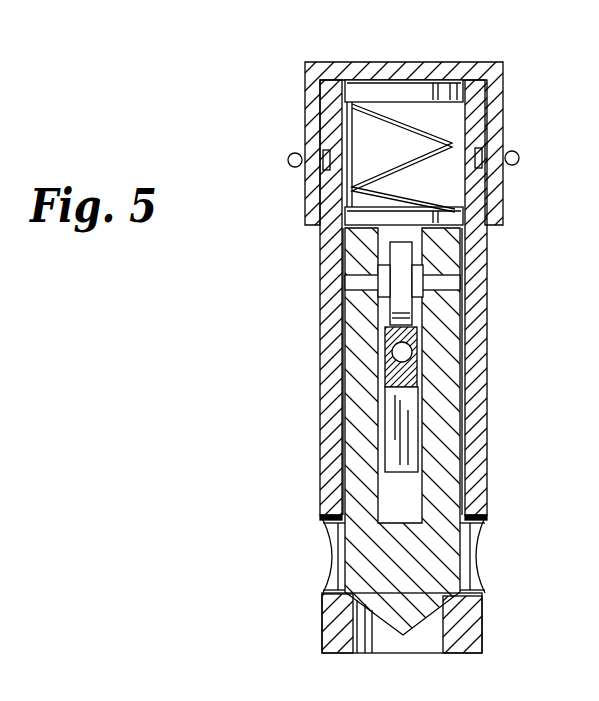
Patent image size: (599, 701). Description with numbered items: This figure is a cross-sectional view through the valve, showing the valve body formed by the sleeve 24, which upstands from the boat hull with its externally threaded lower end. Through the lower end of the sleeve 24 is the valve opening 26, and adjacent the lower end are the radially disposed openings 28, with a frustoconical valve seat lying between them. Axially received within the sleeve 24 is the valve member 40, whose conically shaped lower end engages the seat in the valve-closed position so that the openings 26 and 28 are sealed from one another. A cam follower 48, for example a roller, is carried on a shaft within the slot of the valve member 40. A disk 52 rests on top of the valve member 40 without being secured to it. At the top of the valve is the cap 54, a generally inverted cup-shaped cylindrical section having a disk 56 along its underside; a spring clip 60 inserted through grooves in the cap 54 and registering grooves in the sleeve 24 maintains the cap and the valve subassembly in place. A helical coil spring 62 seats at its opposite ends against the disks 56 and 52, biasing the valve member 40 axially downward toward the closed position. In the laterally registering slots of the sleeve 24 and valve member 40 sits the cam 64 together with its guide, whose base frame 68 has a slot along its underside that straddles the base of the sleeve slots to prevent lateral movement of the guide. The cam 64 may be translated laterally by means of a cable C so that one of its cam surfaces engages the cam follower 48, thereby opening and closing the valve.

The sleeve 24 is at (320, 430).
The valve opening 26 is at (380, 640).
The radially disposed openings 28 is at (330, 528).
The valve member 40 is at (345, 392).
The cam follower 48 is at (403, 257).
The disk 52 is at (322, 239).
The cap 54 is at (304, 74).
The disk 56 is at (352, 74).
The spring clip 60 is at (288, 155).
The helical coil spring 62 is at (408, 120).
The cam 64 is at (410, 369).
The base frame 68 is at (407, 412).
The cable C is at (408, 340).